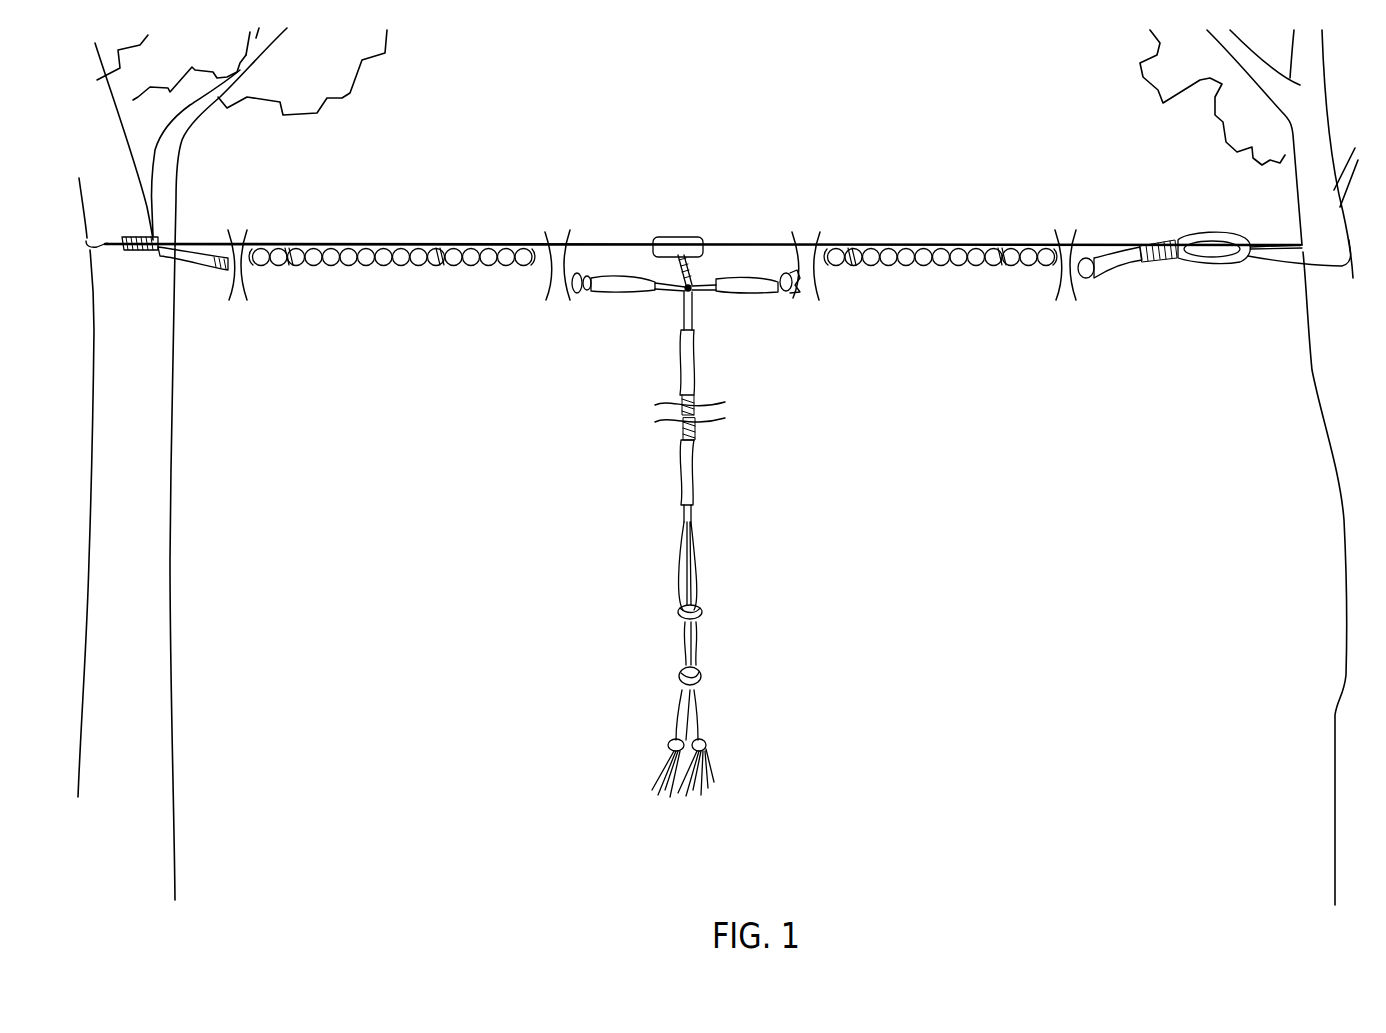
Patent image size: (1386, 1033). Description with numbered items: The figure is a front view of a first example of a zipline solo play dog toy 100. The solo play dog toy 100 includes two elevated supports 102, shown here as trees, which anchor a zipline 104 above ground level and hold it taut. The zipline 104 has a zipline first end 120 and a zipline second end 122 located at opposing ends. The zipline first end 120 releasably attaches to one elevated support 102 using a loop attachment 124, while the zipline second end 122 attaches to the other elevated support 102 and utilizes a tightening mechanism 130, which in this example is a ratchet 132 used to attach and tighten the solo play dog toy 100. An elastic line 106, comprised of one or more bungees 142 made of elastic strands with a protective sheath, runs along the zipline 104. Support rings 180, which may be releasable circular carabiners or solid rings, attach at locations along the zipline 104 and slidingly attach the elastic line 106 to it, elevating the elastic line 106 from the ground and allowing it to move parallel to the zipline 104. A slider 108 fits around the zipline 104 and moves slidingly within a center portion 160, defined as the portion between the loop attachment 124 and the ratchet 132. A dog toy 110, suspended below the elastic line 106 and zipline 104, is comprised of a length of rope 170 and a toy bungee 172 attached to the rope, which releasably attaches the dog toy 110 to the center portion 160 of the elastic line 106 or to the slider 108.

The solo play dog toy 100 is at (691, 86).
The elevated supports 102 is at (150, 378).
The zipline 104 is at (729, 243).
The elastic line 106 is at (372, 265).
The slider 108 is at (666, 237).
The dog toy 110 is at (698, 560).
The zipline first end 120 is at (162, 209).
The zipline second end 122 is at (1214, 257).
The loop attachment 124 is at (95, 238).
The tightening mechanism 130 is at (1164, 287).
The ratchet 132 is at (1213, 260).
The bungees 142 is at (476, 265).
The center portion 160 is at (686, 479).
The length of rope 170 is at (688, 650).
The toy bungee 172 is at (681, 432).
The support rings 180 is at (287, 245).